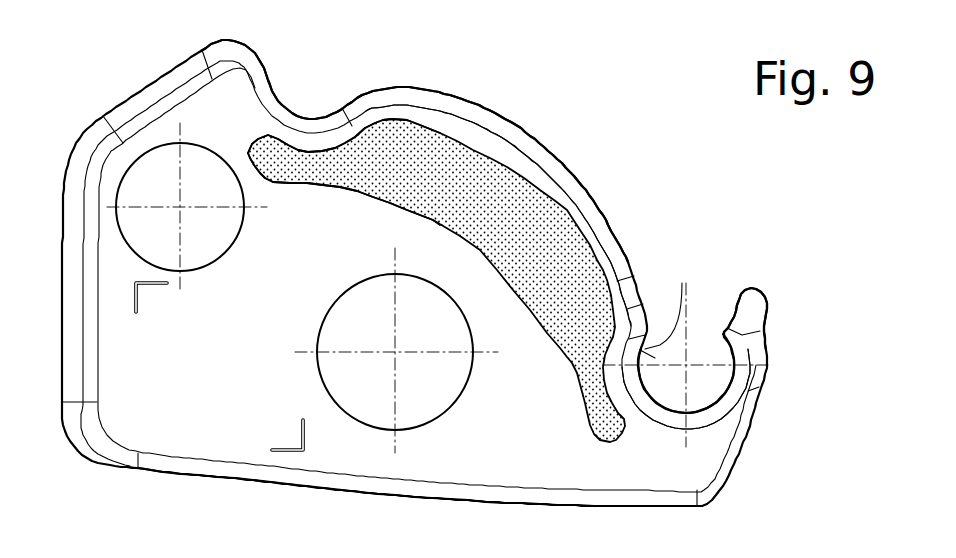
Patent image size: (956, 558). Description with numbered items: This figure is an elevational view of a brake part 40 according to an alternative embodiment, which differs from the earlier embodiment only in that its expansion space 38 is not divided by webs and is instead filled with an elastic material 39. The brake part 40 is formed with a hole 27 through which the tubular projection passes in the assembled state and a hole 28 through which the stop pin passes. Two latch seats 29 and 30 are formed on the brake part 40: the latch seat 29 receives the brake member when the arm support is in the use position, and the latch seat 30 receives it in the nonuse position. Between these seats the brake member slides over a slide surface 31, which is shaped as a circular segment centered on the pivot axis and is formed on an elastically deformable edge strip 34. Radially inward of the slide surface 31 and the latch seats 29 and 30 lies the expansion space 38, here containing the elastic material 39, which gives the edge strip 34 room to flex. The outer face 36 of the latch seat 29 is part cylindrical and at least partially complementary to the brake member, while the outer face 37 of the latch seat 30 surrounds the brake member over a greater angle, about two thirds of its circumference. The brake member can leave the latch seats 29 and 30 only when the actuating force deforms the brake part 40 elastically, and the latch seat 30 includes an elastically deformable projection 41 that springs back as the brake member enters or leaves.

The hole 27 is at (378, 380).
The hole 28 is at (200, 245).
The latch seat 29 is at (309, 80).
The latch seat 30 is at (704, 318).
The slide surface 31 is at (532, 115).
The edge strip 34 is at (566, 183).
The outer face 36 is at (292, 87).
The outer face 37 is at (683, 285).
The expansion space 38 is at (463, 160).
The elastic material 39 is at (411, 157).
The brake part 40 is at (184, 430).
The elastically deformable projection 41 is at (768, 318).